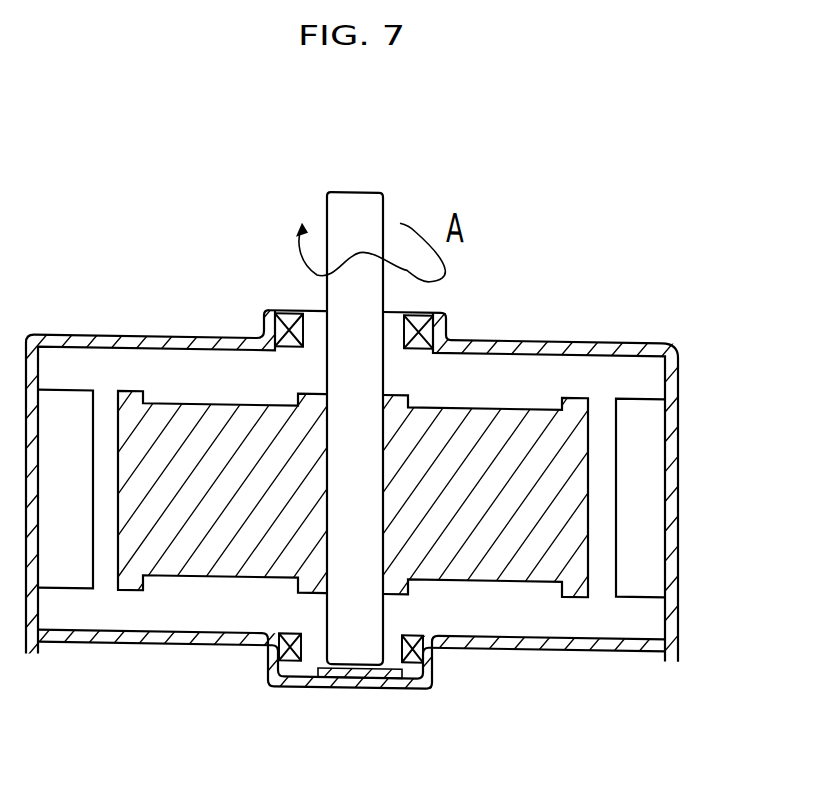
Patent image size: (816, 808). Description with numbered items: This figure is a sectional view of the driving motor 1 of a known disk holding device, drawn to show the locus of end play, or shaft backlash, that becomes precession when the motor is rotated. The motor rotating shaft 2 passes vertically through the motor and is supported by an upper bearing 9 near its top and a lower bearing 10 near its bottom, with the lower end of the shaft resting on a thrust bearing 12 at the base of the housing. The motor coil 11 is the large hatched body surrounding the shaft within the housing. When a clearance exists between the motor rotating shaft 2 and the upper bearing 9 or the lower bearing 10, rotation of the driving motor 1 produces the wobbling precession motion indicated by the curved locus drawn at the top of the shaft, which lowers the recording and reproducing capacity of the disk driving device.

The driving motor 1 is at (733, 291).
The motor rotating shaft 2 is at (352, 641).
The upper bearing 9 is at (447, 308).
The lower bearing 10 is at (422, 681).
The motor coil 11 is at (215, 551).
The thrust bearing 12 is at (403, 684).